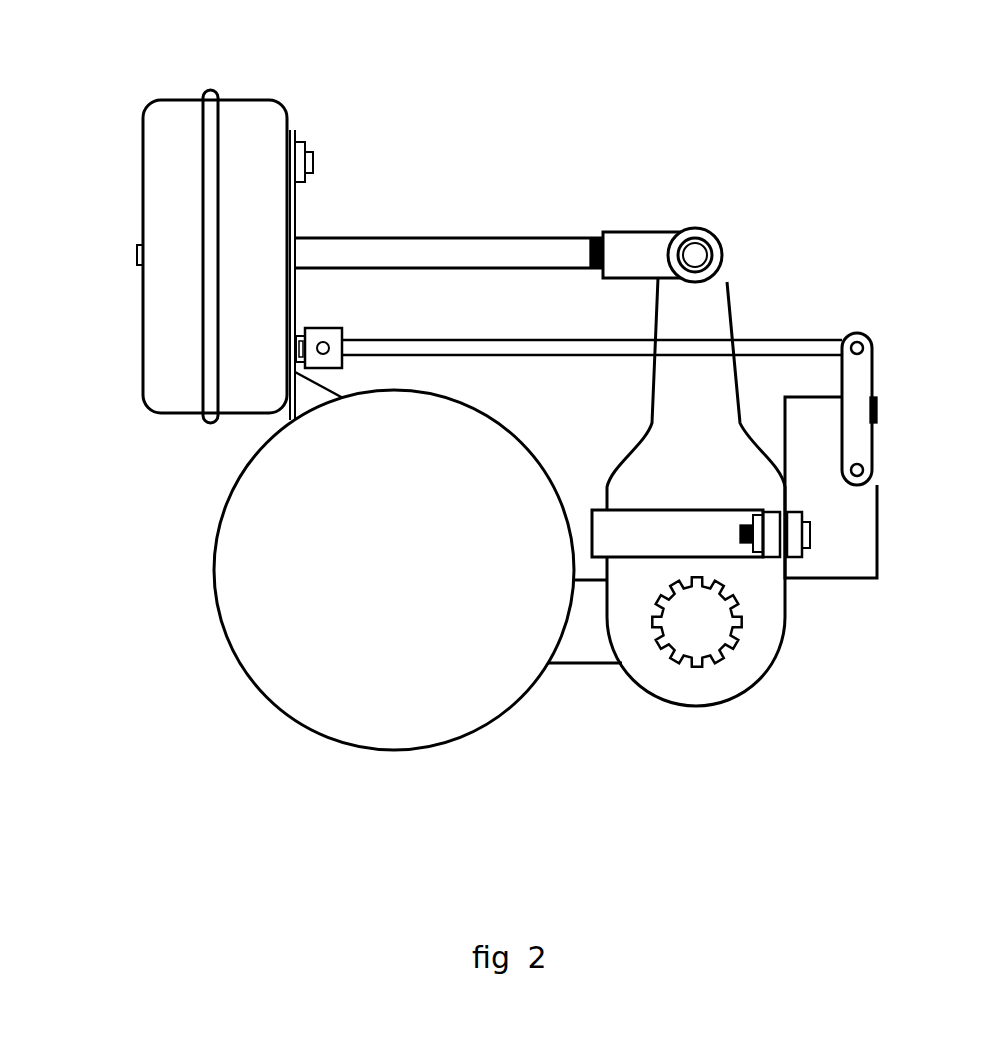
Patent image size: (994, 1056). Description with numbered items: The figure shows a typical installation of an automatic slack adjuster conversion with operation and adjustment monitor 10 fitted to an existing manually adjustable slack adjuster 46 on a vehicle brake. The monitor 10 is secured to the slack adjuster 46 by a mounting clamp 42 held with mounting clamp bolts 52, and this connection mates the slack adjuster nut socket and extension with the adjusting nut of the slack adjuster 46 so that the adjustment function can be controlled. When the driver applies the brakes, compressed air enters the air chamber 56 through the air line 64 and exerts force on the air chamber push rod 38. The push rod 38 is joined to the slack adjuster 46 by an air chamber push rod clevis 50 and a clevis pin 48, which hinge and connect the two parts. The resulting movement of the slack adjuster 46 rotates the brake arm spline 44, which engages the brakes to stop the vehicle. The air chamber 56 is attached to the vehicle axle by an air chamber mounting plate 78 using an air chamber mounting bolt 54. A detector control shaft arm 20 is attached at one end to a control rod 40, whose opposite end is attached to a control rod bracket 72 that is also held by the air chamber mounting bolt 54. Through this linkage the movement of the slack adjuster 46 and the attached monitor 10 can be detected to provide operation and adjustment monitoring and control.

The automatic slack adjuster conversion with operation and adjustment monitor 10 is at (845, 533).
The detector control shaft arm 20 is at (823, 365).
The air chamber push rod 38 is at (465, 188).
The control rod 40 is at (592, 216).
The mounting clamp 42 is at (658, 612).
The brake arm spline 44 is at (653, 662).
The manually adjustable slack adjuster 46 is at (666, 529).
The clevis pin 48 is at (735, 227).
The air chamber push rod clevis 50 is at (679, 208).
The mounting clamp bolts 52 is at (814, 622).
The air chamber mounting bolt 54 is at (342, 113).
The air chamber 56 is at (242, 147).
The air line 64 is at (107, 231).
The control rod bracket 72 is at (403, 205).
The air chamber mounting plate 78 is at (348, 570).